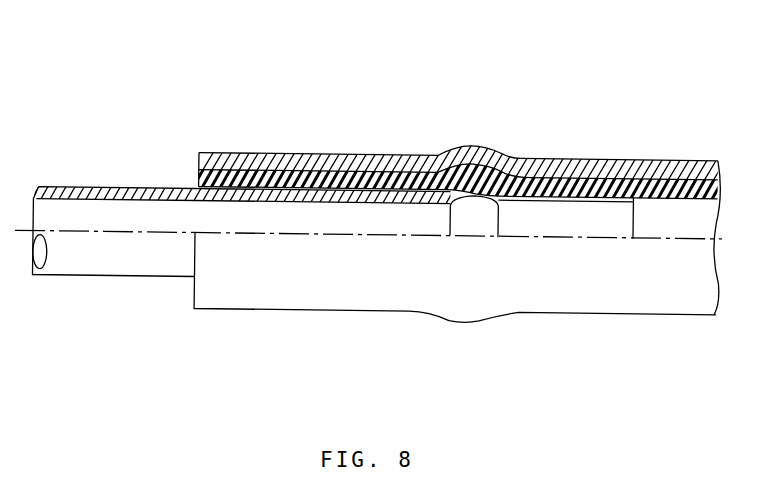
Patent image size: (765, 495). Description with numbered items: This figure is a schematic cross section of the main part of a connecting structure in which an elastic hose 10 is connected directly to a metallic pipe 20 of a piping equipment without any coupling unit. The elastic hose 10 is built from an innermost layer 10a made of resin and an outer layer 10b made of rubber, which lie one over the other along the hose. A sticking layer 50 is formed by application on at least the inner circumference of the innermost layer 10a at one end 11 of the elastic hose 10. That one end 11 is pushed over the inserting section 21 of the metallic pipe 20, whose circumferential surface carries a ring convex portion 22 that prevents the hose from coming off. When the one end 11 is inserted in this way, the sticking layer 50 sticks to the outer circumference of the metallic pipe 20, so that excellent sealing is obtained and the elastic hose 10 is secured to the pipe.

The elastic hose 10 is at (656, 150).
The innermost layer 10a is at (198, 183).
The outer layer 10b is at (198, 160).
The one end 11 is at (392, 155).
The ring convex portion 22 is at (490, 151).
The metallic pipe 20 is at (137, 279).
The inserting section 21 is at (337, 203).
The sticking layer 50 is at (585, 197).